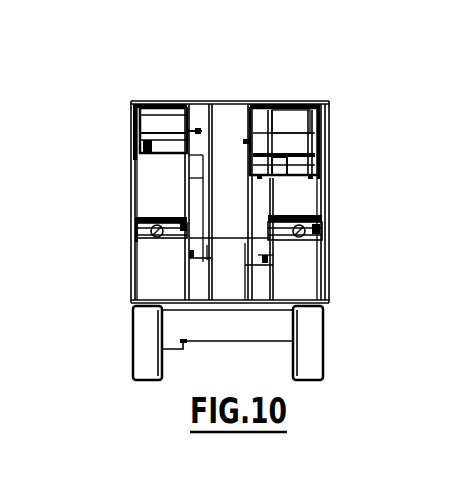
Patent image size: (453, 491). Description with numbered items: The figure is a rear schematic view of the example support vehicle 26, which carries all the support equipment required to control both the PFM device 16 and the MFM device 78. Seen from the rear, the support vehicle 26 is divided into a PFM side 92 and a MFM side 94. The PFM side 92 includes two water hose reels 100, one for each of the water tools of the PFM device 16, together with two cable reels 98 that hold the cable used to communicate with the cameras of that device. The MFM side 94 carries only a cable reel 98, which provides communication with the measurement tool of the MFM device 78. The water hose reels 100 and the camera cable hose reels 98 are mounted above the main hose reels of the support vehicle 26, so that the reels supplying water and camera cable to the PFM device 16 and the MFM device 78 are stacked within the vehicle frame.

The support vehicle 26 is at (336, 77).
The PFM side 92 is at (362, 174).
The MFM side 94 is at (105, 195).
The camera cable hose reel 98 is at (135, 130).
The water hose reel 100 is at (330, 138).
The MFM device 78 is at (135, 240).
The PFM device 16 is at (325, 222).